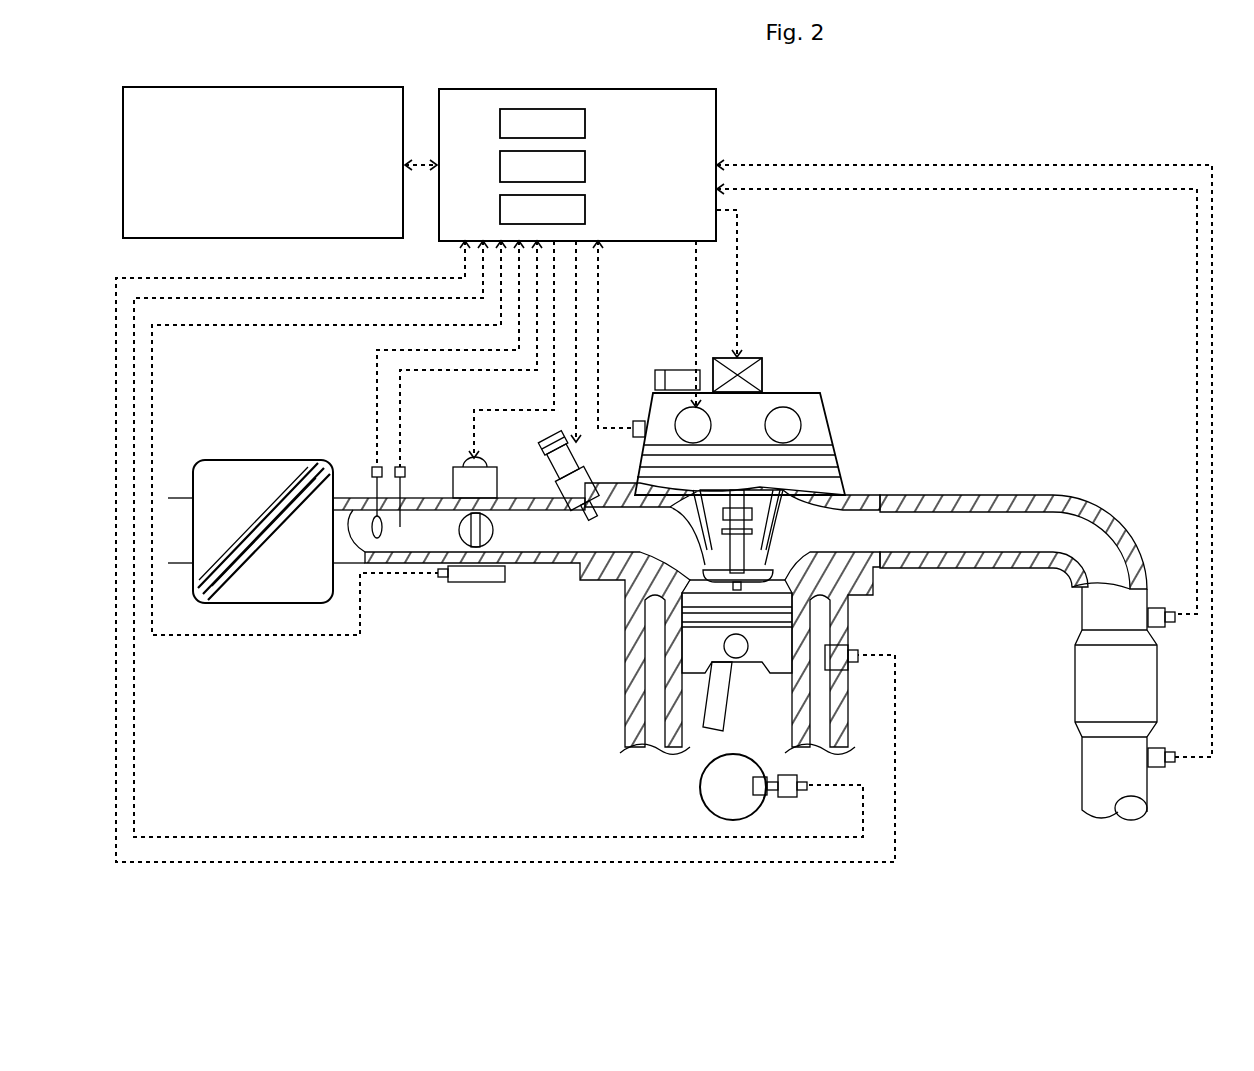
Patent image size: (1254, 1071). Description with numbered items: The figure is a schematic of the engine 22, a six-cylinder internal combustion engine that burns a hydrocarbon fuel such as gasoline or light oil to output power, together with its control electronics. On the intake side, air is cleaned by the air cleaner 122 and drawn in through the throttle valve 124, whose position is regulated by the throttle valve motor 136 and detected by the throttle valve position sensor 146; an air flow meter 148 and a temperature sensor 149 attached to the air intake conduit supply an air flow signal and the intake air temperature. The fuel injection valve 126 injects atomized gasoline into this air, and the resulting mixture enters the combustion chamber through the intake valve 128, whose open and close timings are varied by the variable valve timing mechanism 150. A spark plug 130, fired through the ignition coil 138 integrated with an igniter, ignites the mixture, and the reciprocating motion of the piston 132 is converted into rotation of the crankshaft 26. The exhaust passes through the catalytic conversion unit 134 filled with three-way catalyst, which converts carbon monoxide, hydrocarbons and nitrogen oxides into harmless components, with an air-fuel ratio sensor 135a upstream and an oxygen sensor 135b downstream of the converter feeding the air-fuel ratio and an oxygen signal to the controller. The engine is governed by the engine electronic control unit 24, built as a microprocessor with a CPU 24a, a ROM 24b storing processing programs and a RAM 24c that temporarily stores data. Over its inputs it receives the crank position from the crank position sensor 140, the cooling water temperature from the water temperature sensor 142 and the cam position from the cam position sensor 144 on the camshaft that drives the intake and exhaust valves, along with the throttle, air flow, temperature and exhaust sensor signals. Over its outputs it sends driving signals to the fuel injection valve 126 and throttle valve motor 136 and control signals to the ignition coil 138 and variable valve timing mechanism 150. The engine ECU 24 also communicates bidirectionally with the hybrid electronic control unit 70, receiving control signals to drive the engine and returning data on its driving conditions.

The hybrid electronic control unit 70 is at (263, 87).
The engine electronic control unit 24 is at (577, 138).
The CPU 24a is at (586, 124).
The ROM 24b is at (586, 165).
The RAM 24c is at (586, 210).
The engine 22 is at (804, 550).
The air cleaner 122 is at (258, 460).
The throttle valve 124 is at (492, 538).
The fuel injection valve 126 is at (580, 505).
The intake valve 128 is at (688, 555).
The spark plug 130 is at (768, 562).
The piston 132 is at (698, 645).
The catalytic conversion unit 134 is at (1085, 668).
The air-fuel ratio sensor 135a is at (1153, 603).
The oxygen sensor 135b is at (1152, 770).
The throttle valve motor 136 is at (455, 465).
The ignition coil 138 is at (765, 375).
The crank position sensor 140 is at (790, 797).
The water temperature sensor 142 is at (850, 645).
The cam position sensor 144 is at (633, 422).
The throttle valve position sensor 146 is at (475, 583).
The air flow meter 148 is at (372, 467).
The temperature sensor 149 is at (404, 467).
The variable valve timing mechanism 150 is at (835, 437).
The crankshaft 26 is at (700, 787).